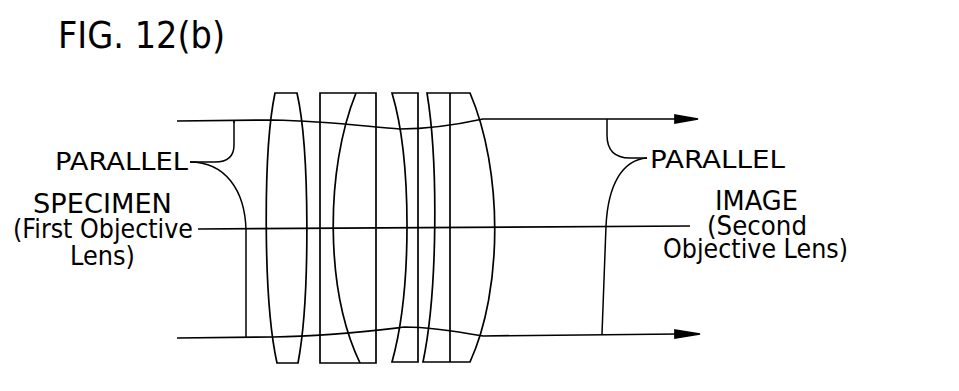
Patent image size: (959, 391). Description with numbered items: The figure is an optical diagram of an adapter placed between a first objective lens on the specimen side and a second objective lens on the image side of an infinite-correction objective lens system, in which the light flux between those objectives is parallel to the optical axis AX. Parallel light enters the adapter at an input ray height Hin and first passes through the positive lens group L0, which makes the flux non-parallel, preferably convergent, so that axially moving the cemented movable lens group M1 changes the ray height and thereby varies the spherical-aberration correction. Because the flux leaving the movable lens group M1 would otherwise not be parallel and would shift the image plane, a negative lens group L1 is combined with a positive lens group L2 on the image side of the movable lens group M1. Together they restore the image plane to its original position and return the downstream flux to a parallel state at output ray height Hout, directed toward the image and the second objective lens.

The positive lens group L0 is at (305, 91).
The cemented movable lens group M1 is at (380, 91).
The negative lens group L1 is at (418, 91).
The positive lens group L2 is at (477, 91).
The input ray height Hin is at (272, 119).
The output ray height Hout is at (483, 118).
The optical axis AX is at (515, 226).